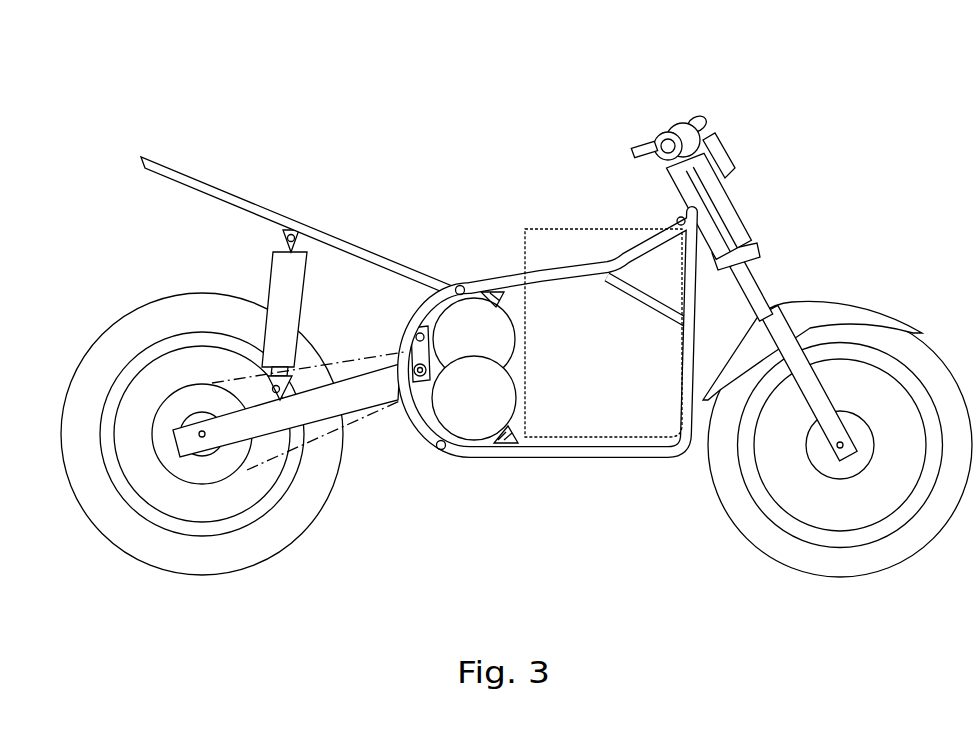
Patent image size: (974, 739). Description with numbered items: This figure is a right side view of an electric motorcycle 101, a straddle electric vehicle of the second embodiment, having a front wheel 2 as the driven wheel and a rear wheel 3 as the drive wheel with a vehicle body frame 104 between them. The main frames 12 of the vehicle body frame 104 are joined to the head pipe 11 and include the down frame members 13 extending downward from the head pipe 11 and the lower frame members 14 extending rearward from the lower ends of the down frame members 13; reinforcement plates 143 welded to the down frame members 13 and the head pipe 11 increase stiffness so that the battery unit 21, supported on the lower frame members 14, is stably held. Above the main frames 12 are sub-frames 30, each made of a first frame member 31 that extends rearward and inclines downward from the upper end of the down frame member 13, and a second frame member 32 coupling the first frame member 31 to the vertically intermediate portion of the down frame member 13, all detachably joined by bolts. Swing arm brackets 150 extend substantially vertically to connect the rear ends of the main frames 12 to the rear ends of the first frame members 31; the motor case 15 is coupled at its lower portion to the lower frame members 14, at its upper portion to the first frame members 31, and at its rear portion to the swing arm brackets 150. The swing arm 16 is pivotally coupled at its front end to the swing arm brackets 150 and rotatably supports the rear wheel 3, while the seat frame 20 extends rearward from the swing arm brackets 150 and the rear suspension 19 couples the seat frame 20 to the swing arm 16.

The electric motorcycle 101 is at (838, 117).
The front wheel 2 is at (792, 557).
The rear wheel 3 is at (242, 560).
The head pipe 11 is at (688, 190).
The main frames 12 is at (678, 447).
The down frame members 13 is at (686, 373).
The lower frame members 14 is at (600, 450).
The motor case 15 is at (470, 450).
The swing arm 16 is at (318, 407).
The rear suspension 19 is at (285, 283).
The seat frame 20 is at (215, 193).
The battery unit 21 is at (573, 413).
The sub-frames 30 is at (637, 250).
The first frame member 31 is at (553, 272).
The second frame member 32 is at (650, 302).
The vehicle body frame 104 is at (703, 292).
The reinforcement plates 143 is at (708, 233).
The swing arm brackets 150 is at (416, 325).